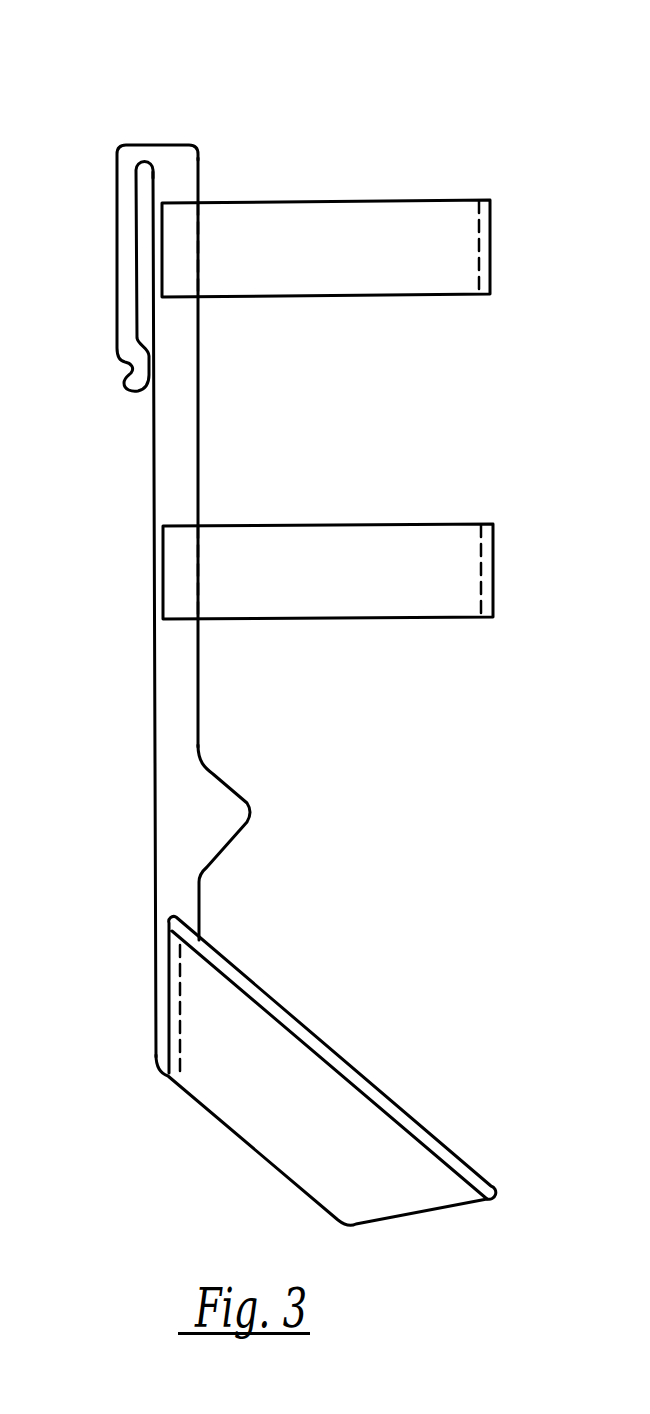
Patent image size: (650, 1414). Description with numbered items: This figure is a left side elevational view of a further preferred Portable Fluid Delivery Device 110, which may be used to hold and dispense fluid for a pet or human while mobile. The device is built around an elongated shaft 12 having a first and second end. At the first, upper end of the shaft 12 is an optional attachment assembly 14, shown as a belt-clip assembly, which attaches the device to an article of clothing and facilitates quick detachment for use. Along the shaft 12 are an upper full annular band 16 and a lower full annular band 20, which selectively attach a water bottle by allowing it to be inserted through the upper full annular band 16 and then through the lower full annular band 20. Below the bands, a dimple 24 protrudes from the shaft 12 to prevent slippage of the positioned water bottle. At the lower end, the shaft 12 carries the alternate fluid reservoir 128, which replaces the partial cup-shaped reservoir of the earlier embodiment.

The Portable Fluid Delivery Device 110 is at (273, 88).
The shaft 12 is at (170, 481).
The attachment assembly 14 is at (124, 244).
The upper full annular band 16 is at (483, 257).
The lower full annular band 20 is at (490, 560).
The dimple 24 is at (238, 816).
The fluid reservoir 128 is at (412, 1183).